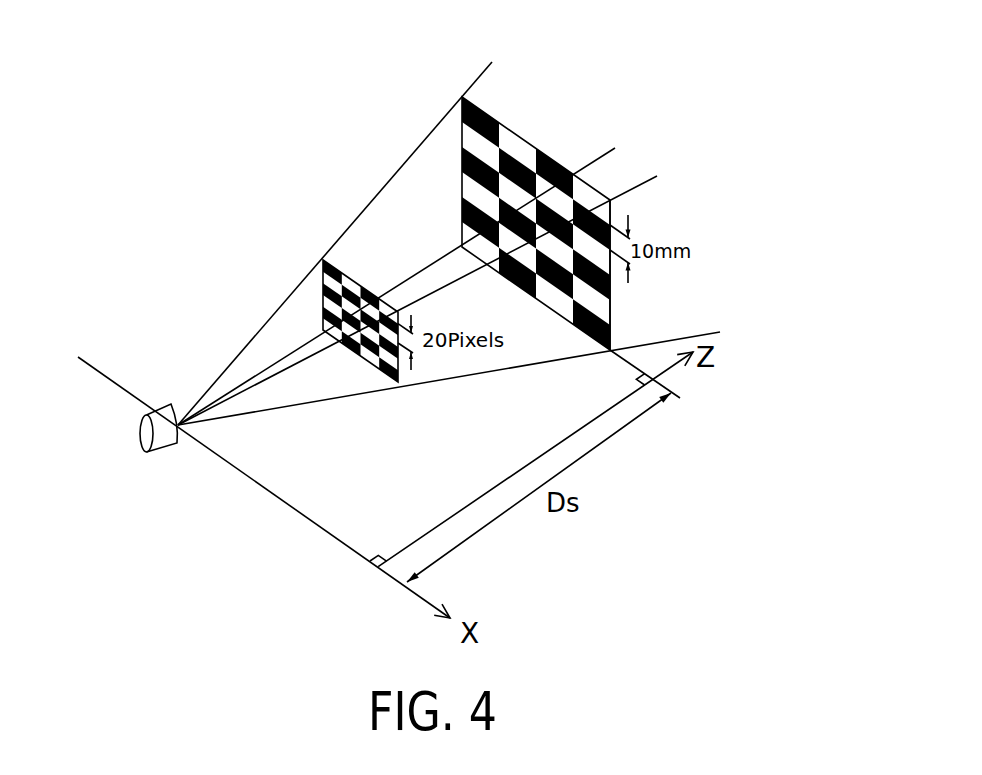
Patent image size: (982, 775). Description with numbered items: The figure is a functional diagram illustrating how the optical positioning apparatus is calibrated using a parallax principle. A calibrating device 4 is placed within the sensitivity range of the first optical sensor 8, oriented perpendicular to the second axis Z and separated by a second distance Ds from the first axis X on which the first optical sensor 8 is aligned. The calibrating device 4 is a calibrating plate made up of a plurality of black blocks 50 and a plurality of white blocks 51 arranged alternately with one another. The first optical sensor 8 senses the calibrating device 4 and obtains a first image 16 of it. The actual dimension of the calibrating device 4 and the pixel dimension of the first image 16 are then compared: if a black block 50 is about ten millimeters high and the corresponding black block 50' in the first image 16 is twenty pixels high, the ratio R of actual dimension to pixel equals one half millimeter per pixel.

The first optical sensor 8 is at (158, 449).
The calibrating device 4 is at (519, 135).
The black block 50 is at (600, 156).
The white block 51 is at (612, 313).
The first image 16 is at (350, 279).
The corresponding black block in the first image 50' is at (399, 267).